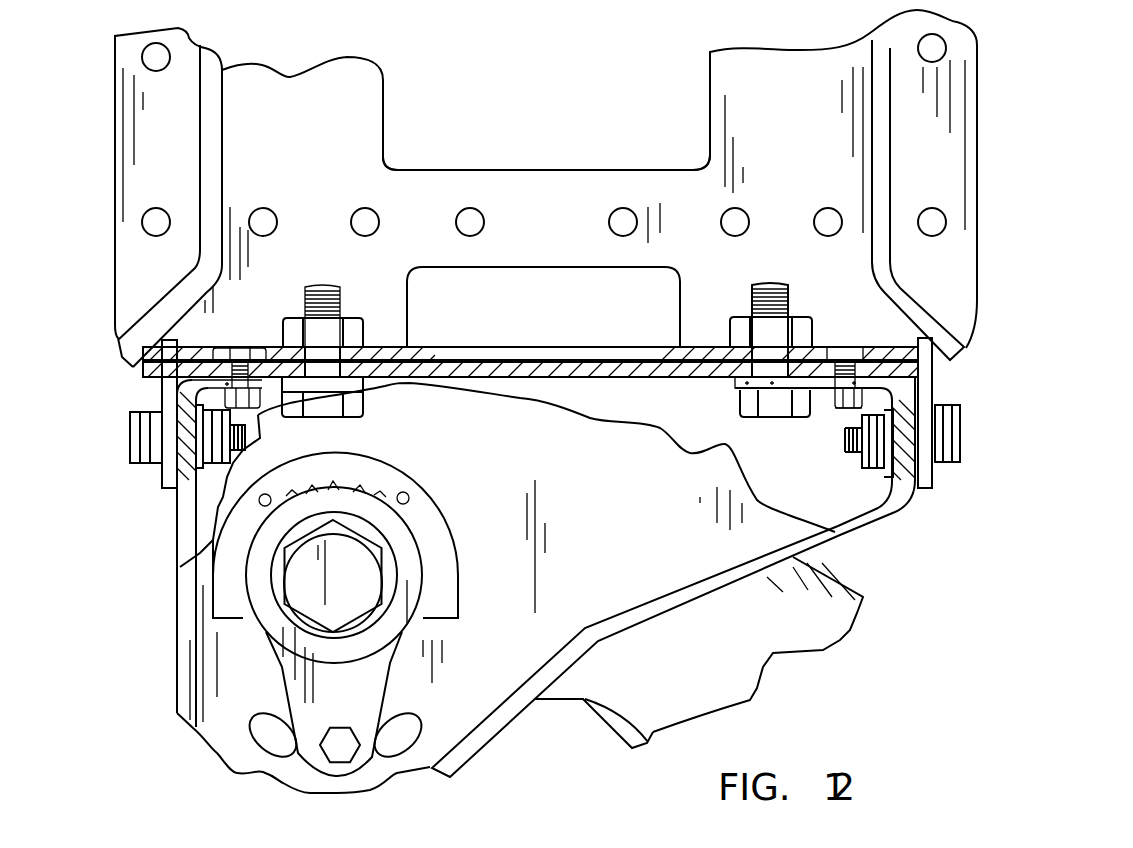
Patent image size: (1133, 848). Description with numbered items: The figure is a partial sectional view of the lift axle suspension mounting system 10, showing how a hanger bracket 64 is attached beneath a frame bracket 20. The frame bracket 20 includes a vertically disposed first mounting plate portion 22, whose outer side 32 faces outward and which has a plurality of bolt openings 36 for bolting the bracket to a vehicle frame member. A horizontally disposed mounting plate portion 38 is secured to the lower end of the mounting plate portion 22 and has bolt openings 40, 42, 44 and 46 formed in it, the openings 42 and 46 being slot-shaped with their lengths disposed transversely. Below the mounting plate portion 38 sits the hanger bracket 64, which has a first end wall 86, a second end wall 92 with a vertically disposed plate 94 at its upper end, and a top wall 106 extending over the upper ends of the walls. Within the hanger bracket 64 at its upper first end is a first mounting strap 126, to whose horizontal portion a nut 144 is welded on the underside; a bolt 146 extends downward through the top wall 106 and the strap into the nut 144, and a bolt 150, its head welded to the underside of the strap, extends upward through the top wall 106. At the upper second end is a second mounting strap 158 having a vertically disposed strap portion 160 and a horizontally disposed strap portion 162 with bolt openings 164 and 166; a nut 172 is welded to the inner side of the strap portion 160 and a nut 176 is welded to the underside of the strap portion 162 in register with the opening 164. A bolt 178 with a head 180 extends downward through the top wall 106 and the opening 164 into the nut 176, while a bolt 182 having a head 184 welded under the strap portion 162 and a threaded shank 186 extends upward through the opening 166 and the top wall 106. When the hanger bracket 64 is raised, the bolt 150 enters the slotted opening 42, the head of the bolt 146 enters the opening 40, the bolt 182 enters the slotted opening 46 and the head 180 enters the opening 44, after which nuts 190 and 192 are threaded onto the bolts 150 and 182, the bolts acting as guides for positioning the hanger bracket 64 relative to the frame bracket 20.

The lift axle suspension mounting system 10 is at (904, 575).
The frame bracket 20 is at (982, 148).
The first mounting plate portion 22 is at (762, 99).
The outer side 32 is at (813, 163).
The bolt openings 36 is at (612, 227).
The mounting plate portion 38 is at (276, 340).
The bolt opening 40 is at (190, 353).
The bolt opening 42 is at (405, 380).
The bolt opening 44 is at (868, 343).
The bolt opening 46 is at (690, 365).
The hanger bracket 64 is at (153, 553).
The first end wall 86 is at (178, 628).
The second end wall 92 is at (888, 528).
The vertically disposed plate 94 is at (910, 458).
The top wall 106 is at (588, 368).
The first mounting strap 126 is at (193, 448).
The nut 144 is at (233, 347).
The bolt 146 is at (233, 371).
The bolt 150 is at (366, 290).
The second mounting strap 158 is at (898, 408).
The strap portion 160 is at (897, 433).
The strap portion 162 is at (825, 388).
The bolt opening 164 is at (885, 402).
The bolt opening 166 is at (722, 390).
The nut 172 is at (862, 467).
The nut 176 is at (260, 402).
The bolt 178 is at (847, 342).
The head 180 is at (805, 330).
The bolt 182 is at (792, 303).
The head 184 is at (776, 405).
The threaded shank 186 is at (752, 300).
The nut 190 is at (364, 330).
The nut 192 is at (852, 344).